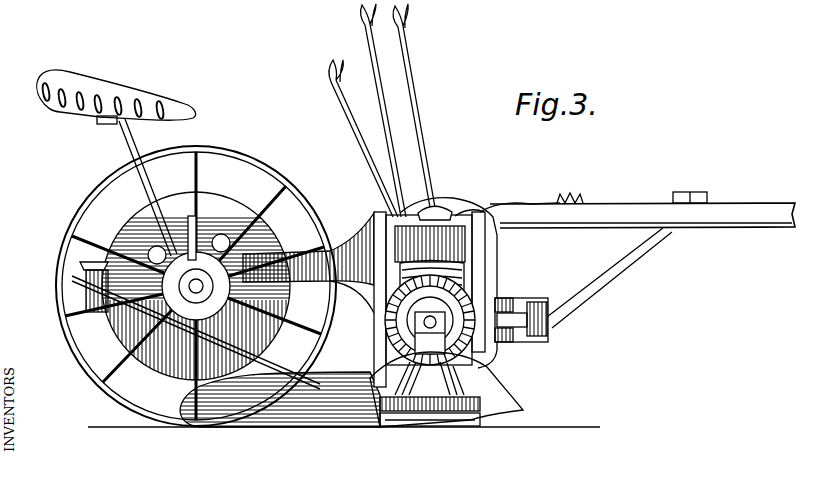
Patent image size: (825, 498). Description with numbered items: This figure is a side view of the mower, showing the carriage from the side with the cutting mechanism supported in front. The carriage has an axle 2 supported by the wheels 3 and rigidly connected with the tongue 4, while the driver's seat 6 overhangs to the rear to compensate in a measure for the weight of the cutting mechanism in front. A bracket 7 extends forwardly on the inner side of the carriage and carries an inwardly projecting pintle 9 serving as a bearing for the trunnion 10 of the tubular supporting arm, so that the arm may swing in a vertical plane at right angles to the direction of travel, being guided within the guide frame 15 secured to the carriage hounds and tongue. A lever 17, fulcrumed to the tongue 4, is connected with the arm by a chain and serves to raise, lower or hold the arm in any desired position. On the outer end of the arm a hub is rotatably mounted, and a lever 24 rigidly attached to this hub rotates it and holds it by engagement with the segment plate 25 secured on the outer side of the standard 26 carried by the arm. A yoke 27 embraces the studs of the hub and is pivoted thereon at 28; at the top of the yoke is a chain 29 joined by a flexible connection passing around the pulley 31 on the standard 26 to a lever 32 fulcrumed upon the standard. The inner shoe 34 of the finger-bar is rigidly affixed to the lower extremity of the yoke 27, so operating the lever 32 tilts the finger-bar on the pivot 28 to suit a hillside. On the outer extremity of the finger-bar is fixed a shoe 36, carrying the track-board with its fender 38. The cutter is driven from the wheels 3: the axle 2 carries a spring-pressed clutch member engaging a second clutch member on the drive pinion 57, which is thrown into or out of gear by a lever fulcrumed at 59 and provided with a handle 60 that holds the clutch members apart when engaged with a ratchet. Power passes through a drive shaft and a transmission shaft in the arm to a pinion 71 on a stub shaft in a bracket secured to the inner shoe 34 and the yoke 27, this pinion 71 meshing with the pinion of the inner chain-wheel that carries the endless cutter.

The axle 2 is at (203, 288).
The wheels 3 is at (236, 153).
The tongue 4 is at (600, 228).
The driver's seat 6 is at (151, 106).
The bracket 7 is at (508, 343).
The pintle 9 is at (546, 309).
The trunnion 10 is at (525, 343).
The guide frame 15 is at (467, 258).
The lever 17 is at (368, 155).
The lever 24 is at (393, 145).
The segment plate 25 is at (410, 268).
The standard 26 is at (410, 278).
The yoke 27 is at (374, 318).
The pivot 28 is at (490, 367).
The chain 29 is at (445, 198).
The pulley 31 is at (483, 212).
The lever 32 is at (437, 161).
The inner shoe 34 is at (280, 399).
The shoe 36 is at (518, 411).
The fender 38 is at (196, 332).
The drive pinion 57 is at (196, 288).
The fulcrum 59 is at (94, 262).
The handle 60 is at (189, 216).
The pinion 71 is at (450, 298).